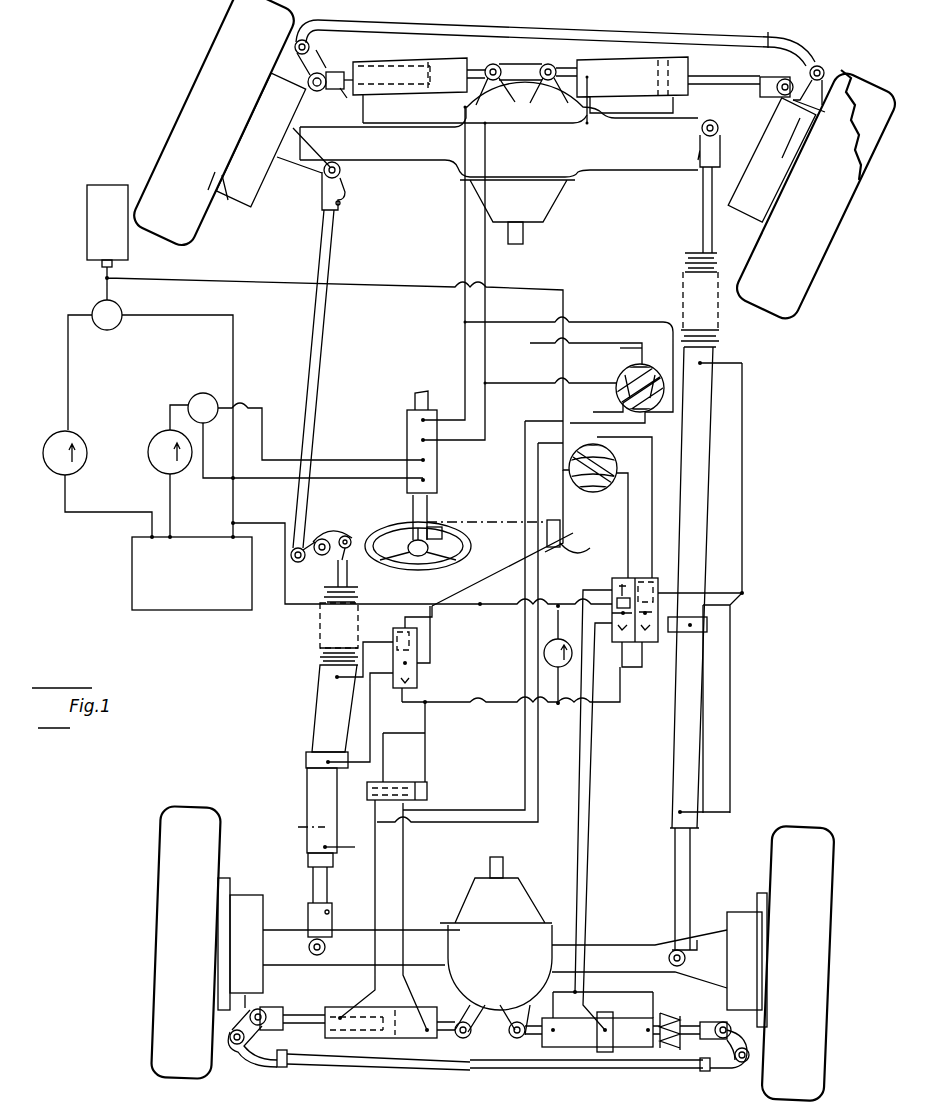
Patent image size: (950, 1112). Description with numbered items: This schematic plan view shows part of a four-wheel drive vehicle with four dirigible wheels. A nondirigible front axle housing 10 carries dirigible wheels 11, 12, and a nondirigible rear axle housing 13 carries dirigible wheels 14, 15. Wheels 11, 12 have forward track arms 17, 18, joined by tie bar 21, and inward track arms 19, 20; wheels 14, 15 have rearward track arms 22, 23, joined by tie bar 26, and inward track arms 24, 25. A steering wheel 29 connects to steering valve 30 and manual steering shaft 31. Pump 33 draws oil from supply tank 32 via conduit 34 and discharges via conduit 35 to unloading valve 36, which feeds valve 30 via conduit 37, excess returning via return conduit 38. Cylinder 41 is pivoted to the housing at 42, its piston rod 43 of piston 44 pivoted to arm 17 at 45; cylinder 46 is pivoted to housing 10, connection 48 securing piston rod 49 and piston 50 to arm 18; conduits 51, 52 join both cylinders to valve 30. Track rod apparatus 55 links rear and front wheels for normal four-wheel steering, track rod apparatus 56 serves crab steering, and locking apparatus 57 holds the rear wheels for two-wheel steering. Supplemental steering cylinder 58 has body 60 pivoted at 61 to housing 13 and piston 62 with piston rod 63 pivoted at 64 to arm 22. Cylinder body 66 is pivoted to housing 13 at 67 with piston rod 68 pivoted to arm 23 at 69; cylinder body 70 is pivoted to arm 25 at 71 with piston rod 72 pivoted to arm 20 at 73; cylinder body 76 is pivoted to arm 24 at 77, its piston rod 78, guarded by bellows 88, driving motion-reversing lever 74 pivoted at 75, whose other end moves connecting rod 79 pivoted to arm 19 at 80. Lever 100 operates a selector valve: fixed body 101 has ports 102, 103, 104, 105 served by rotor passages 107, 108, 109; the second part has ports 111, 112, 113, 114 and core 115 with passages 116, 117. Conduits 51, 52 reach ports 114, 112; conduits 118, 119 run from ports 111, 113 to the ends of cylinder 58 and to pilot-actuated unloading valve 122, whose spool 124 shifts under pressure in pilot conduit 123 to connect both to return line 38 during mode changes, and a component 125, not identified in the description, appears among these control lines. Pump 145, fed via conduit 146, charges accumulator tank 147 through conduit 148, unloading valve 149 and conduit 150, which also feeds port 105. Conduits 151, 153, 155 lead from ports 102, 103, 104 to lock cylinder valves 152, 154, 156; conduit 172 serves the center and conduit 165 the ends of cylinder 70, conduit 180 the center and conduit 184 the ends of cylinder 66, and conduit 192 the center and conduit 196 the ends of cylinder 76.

The steering gear housing 10 is at (532, 156).
The left front wheel 11 is at (228, 192).
The right front wheel 12 is at (800, 280).
The rear axle 13 is at (488, 964).
The left rear wheel 14 is at (150, 938).
The right rear wheel 15 is at (800, 835).
The pivot 17 is at (322, 54).
The pivot 18 is at (812, 62).
The left steering knuckle 19 is at (300, 176).
The pivot 20 is at (742, 128).
The tie rod 21 is at (586, 36).
The pivot 22 is at (265, 1005).
The pivot 23 is at (720, 1022).
The left rear knuckle 24 is at (276, 930).
The right rear knuckle 25 is at (705, 942).
The rear tie rod 26 is at (520, 1070).
The steering wheel 29 is at (466, 564).
The control valve 30 is at (438, 466).
The valve stem 31 is at (414, 400).
The supply tank 32 is at (130, 578).
The pump 33 is at (148, 446).
The suction line 34 is at (172, 500).
The pressure line 35 is at (168, 410).
The relief valve 36 is at (188, 388).
The pressure line 37 is at (264, 410).
The return line 38 is at (234, 500).
The power cylinder 41 is at (442, 94).
The pivot 42 is at (500, 66).
The cylinder mount 43 is at (337, 101).
The piston rod 44 is at (425, 62).
The pivot 45 is at (306, 82).
The power cylinder 46 is at (608, 86).
The right steering knuckle 48 is at (812, 125).
The piston rod 49 is at (735, 80).
The cylinder mount 50 is at (688, 60).
The fluid line 51 is at (462, 233).
The fluid line 52 is at (488, 266).
The rear steering actuator 55 is at (306, 718).
The rear steering actuator 56 is at (731, 550).
The rear power cylinder 57 is at (614, 1058).
The piston rod 58 is at (429, 1048).
The rear power cylinder 60 is at (406, 1045).
The pivot 61 is at (460, 1042).
The tie rod 62 is at (370, 1055).
The piston rod 63 is at (312, 1010).
The steering arm 64 is at (252, 1040).
The piston 66 is at (648, 1048).
The pivot 67 is at (504, 1032).
The spring 68 is at (672, 1052).
The steering arm 69 is at (742, 1065).
The cylinder tube 70 is at (706, 695).
The pivot 71 is at (668, 952).
The rod 72 is at (700, 213).
The pivot bracket 73 is at (700, 129).
The pivot 74 is at (350, 535).
The pivot 75 is at (322, 538).
The collar 76 is at (312, 786).
The pivot 77 is at (330, 940).
The bellows 78 is at (358, 590).
The drag link 79 is at (327, 352).
The pivot 80 is at (341, 176).
The cylinder extension 88 is at (300, 643).
The cam 100 is at (440, 530).
The valve port 101 is at (617, 467).
The ball valve 102 is at (590, 450).
The fluid line 103 is at (653, 475).
The lever 104 is at (594, 500).
The valve port 105 is at (575, 462).
The valve port 107 is at (612, 458).
The lever pivot 108 is at (598, 514).
The axis line 109 is at (585, 470).
The valve port 111 is at (615, 330).
The valve port 112 is at (660, 330).
The valve port 113 is at (622, 410).
The ball valve 114 is at (608, 395).
The ball passage 115 is at (663, 393).
The valve port 116 is at (625, 372).
The valve port 117 is at (650, 404).
The fluid line 118 is at (525, 422).
The fluid line 119 is at (538, 443).
The selector valve 122 is at (432, 798).
The fluid line 123 is at (428, 753).
The valve spool 124 is at (400, 786).
The check valve 125 is at (543, 652).
The pump 145 is at (58, 473).
The suction line 146 is at (90, 520).
The accumulator tank 147 is at (87, 222).
The pressure line 148 is at (68, 366).
The unloading valve 149 is at (122, 312).
The pressure line 150 is at (95, 274).
The fluid line 151 is at (650, 520).
The fluid line 152 is at (728, 585).
The fluid line 153 is at (650, 542).
The control valve 154 is at (609, 578).
The link 155 is at (560, 535).
The control valve 156 is at (426, 680).
The fluid line 165 is at (742, 626).
The anchor block 172 is at (668, 645).
The fluid line 180 is at (597, 761).
The fluid line 184 is at (586, 827).
The fluid line 192 is at (372, 718).
The axis line 196 is at (292, 823).